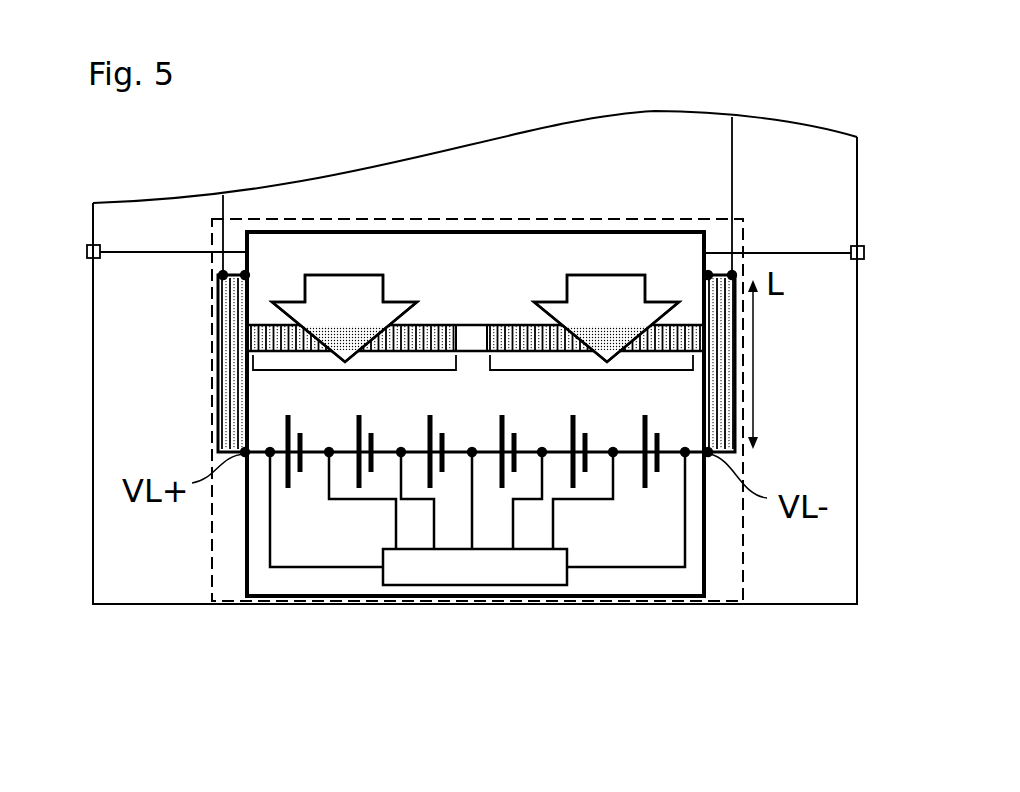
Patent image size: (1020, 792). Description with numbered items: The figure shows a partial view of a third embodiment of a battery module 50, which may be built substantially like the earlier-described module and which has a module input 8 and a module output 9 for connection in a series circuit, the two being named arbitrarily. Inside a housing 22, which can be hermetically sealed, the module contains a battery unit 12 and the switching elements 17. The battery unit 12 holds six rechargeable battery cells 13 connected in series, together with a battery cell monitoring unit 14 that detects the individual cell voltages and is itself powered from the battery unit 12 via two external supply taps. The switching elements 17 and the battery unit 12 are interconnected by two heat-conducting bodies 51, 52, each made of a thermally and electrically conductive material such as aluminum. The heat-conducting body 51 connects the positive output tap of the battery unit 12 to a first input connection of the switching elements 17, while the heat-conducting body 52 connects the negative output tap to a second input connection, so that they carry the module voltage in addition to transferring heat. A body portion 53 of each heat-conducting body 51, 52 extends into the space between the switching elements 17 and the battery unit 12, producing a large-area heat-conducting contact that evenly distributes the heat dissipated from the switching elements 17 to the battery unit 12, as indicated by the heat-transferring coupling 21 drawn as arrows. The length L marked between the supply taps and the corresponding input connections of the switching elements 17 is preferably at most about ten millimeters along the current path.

The module input 8 is at (88, 258).
The module output 9 is at (865, 257).
The battery unit 12 is at (247, 518).
The battery cells 13 is at (638, 414).
The battery cell monitoring unit 14 is at (465, 573).
The switching elements 17 is at (553, 252).
The heat-transferring coupling 21 is at (326, 315).
The housing 22 is at (743, 567).
The battery module 50 is at (380, 168).
The heat-conducting body 51 is at (227, 312).
The heat-conducting body 52 is at (718, 350).
The body portion 53 is at (297, 383).